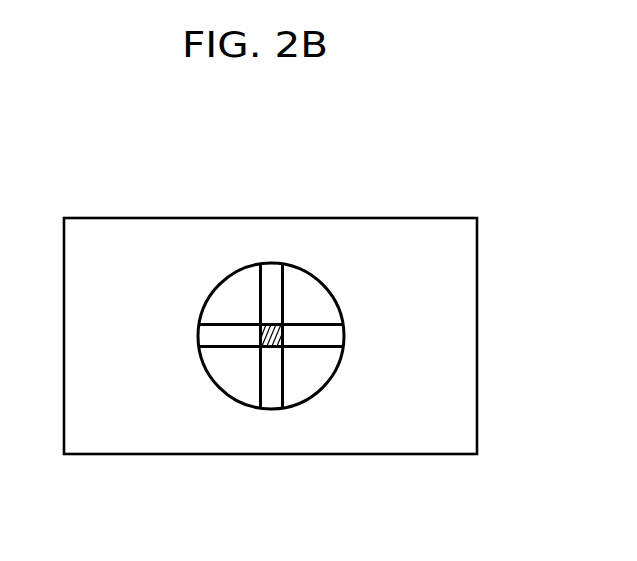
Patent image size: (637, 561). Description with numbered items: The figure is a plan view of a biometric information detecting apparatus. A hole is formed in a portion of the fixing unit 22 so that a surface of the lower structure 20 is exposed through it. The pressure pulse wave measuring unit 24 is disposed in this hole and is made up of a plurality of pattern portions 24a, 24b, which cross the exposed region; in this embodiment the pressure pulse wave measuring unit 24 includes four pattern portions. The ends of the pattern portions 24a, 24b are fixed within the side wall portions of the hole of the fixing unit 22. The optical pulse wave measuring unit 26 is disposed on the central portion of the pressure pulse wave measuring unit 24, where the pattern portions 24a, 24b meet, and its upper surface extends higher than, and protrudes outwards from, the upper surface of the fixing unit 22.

The lower structure 20 is at (313, 373).
The fixing unit 22 is at (412, 245).
The pressure pulse wave measuring unit 24 is at (271, 267).
The pattern portion 24a is at (223, 333).
The pattern portion 24b is at (277, 295).
The optical pulse wave measuring unit 26 is at (272, 347).